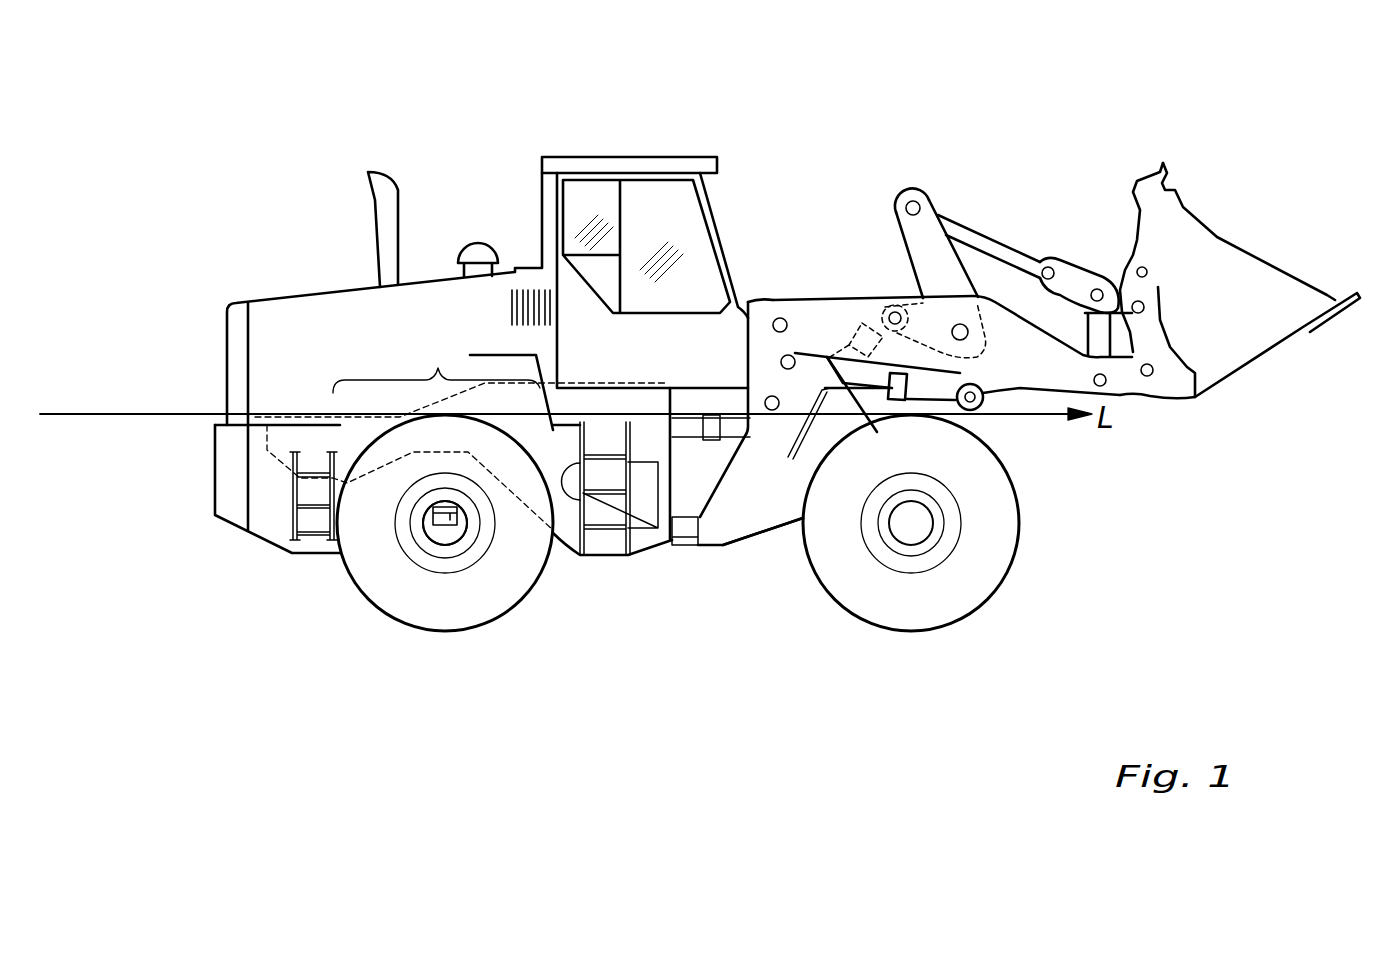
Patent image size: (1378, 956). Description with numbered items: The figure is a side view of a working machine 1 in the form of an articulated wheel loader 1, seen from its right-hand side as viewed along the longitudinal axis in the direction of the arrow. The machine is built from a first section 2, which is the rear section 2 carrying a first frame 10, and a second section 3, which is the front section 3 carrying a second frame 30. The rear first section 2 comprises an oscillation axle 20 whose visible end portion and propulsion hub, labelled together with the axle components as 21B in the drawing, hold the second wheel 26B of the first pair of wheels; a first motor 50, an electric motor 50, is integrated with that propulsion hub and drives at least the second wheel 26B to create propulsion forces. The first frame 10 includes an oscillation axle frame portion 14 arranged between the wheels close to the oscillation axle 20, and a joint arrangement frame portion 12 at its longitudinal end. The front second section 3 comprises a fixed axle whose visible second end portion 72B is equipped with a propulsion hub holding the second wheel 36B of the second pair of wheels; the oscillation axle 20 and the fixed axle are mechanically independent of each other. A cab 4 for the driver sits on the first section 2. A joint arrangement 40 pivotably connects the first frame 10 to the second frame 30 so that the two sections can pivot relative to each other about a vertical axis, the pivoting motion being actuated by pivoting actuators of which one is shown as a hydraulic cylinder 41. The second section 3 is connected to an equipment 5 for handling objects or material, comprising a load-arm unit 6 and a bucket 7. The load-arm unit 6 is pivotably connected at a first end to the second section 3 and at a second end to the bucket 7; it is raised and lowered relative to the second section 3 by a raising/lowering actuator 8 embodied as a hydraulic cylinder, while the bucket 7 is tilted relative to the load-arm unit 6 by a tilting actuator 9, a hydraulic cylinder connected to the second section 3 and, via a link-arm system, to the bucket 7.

The working machine 1 is at (310, 142).
The first section 2 is at (267, 512).
The second section 3 is at (733, 515).
The cab 4 is at (605, 188).
The equipment 5 is at (1042, 172).
The load-arm unit 6 is at (1118, 383).
The bucket 7 is at (1220, 280).
The raising/lowering actuator 8 is at (930, 414).
The tilting actuator 9 is at (977, 232).
The first frame 10 is at (290, 438).
The joint arrangement frame portion 12 is at (645, 403).
The oscillation axle frame portion 14 is at (436, 362).
The oscillation axle 20 is at (433, 537).
The rear axle shaft, differential and brake 21B is at (445, 547).
The second wheel 26B is at (438, 615).
The second frame 30 is at (770, 508).
The second wheel 36B is at (912, 620).
The joint arrangement 40 is at (677, 543).
The hydraulic cylinder 41 is at (700, 417).
The first motor 50 is at (453, 528).
The second end portion 72B is at (912, 530).